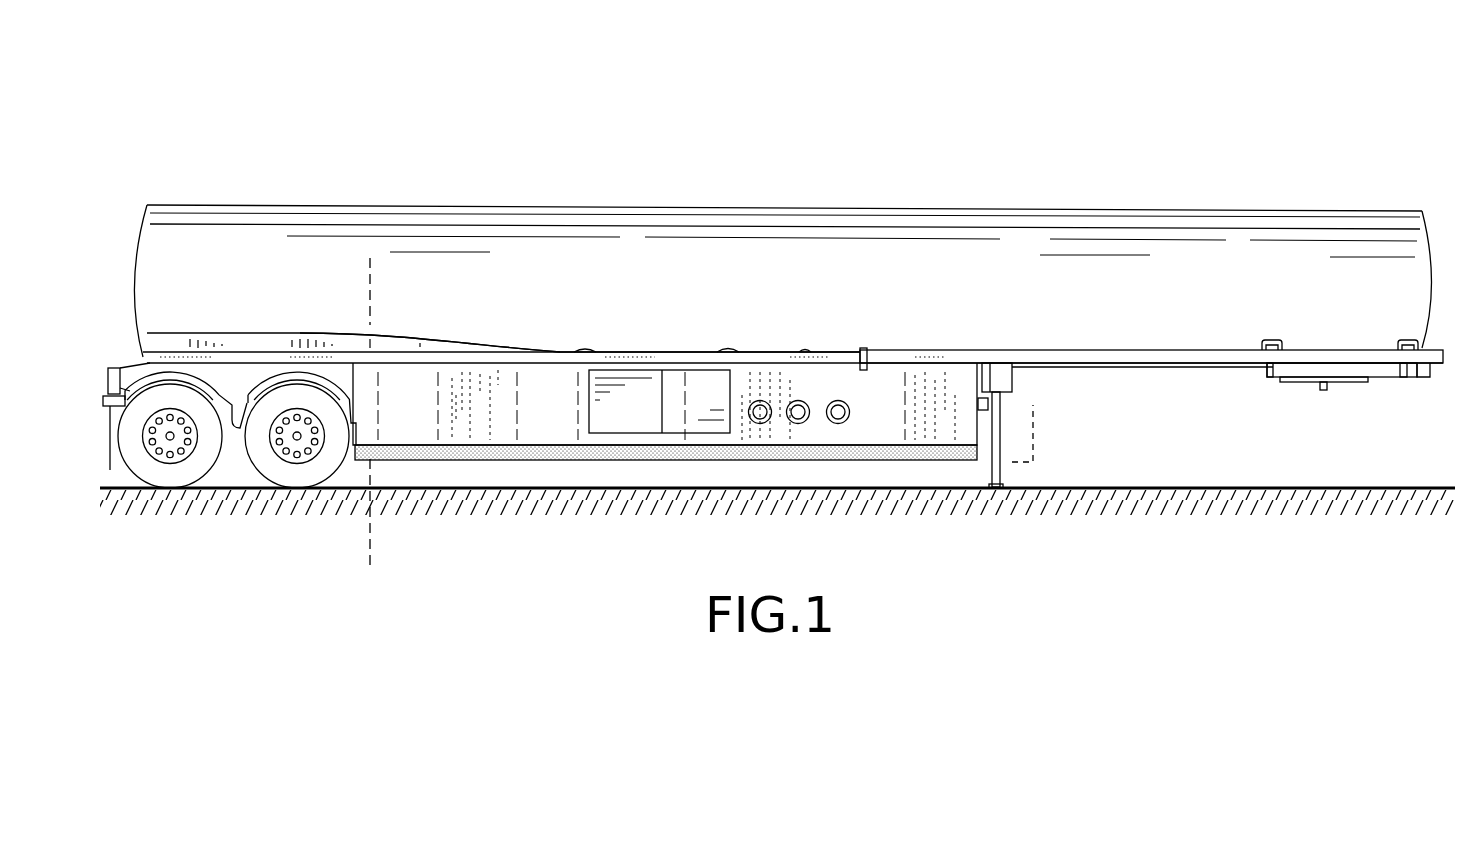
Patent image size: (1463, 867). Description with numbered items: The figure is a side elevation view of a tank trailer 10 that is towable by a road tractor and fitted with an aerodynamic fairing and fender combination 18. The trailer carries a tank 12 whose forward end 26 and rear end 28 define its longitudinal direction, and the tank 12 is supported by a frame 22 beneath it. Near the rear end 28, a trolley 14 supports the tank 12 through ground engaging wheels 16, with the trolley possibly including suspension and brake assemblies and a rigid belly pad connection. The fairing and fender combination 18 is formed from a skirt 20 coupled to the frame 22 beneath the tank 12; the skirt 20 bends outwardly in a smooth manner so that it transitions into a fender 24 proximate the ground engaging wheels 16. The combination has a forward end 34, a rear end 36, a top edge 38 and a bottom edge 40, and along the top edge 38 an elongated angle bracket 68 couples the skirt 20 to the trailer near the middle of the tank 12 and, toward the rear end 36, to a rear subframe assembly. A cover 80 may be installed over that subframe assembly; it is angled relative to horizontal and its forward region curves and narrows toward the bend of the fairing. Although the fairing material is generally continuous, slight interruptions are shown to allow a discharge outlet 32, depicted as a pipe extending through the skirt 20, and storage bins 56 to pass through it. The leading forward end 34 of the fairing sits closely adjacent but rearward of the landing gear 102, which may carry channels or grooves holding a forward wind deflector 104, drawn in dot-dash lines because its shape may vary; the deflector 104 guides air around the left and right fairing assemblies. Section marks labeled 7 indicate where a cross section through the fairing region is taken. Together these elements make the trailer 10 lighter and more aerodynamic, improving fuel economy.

The tank trailer 10 is at (1010, 90).
The tank 12 is at (1018, 208).
The trolley 14 is at (163, 490).
The ground engaging wheels 16 is at (268, 455).
The air fairing and fender combination 18 is at (553, 447).
The skirt 20 is at (860, 392).
The frame 22 is at (290, 378).
The fender 24 is at (230, 378).
The forward end 26 is at (1440, 205).
The rear end 28 is at (120, 200).
The discharge outlet 32 is at (840, 425).
The forward end 34 is at (990, 430).
The rear end 36 is at (118, 368).
The top edge 38 is at (625, 350).
The bottom edge 40 is at (453, 466).
The storage bins 56 is at (688, 385).
The elongated angle bracket 68 is at (413, 358).
The cover 80 is at (190, 338).
The landing gear 102 is at (1003, 487).
The forward wind deflector 104 is at (1035, 405).
The section line 7- 7 is at (370, 258).